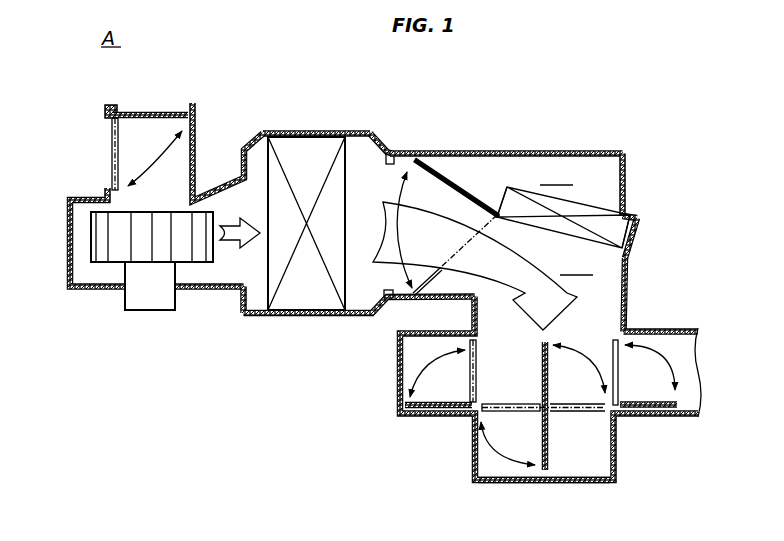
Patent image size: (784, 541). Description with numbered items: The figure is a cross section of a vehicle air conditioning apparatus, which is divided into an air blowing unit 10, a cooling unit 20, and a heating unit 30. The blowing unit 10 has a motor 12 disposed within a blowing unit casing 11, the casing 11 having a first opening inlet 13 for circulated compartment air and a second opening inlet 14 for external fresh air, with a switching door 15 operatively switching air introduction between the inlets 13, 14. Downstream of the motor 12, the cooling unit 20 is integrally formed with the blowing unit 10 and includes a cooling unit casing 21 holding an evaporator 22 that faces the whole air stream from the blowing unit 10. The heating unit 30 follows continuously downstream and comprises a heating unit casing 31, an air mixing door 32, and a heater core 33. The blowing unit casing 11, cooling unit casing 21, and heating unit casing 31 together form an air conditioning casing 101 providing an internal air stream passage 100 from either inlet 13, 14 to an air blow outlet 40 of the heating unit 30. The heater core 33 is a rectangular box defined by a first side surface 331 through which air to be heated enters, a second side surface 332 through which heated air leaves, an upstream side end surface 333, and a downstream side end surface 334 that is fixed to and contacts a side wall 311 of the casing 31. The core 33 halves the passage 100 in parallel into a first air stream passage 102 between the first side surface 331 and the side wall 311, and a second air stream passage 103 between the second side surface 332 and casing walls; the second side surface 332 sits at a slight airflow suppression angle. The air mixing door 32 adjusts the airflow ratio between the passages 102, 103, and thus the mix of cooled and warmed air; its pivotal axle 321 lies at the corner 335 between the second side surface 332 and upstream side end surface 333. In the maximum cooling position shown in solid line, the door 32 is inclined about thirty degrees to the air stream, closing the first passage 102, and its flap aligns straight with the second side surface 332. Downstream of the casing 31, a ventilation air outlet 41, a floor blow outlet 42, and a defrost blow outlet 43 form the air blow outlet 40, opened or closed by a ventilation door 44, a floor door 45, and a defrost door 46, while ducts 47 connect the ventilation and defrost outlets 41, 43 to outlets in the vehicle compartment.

The air blowing unit 10 is at (70, 200).
The blowing unit casing 11 is at (197, 150).
The motor 12 is at (136, 312).
The first opening inlet 13 is at (110, 118).
The second opening inlet 14 is at (117, 106).
The switching door 15 is at (158, 112).
The cooling unit 20 is at (295, 318).
The cooling unit casing 21 is at (310, 133).
The evaporator 22 is at (243, 298).
The heating unit 30 is at (563, 143).
The heating unit casing 31 is at (390, 152).
The air mixing door 32 is at (448, 167).
The heater core 33 is at (600, 208).
The air blow outlet 40 is at (740, 285).
The ventilation air outlet 41 is at (567, 427).
The floor blow outlet 42 is at (455, 382).
The defrost blow outlet 43 is at (640, 377).
The ventilation door 44 is at (550, 460).
The floor door 45 is at (432, 418).
The defrost door 46 is at (618, 385).
The ducts 47 is at (678, 417).
The internal air stream passage 100 is at (376, 229).
The air conditioning casing 101 is at (370, 66).
The first air stream passage 102 is at (558, 175).
The second air stream passage 103 is at (578, 265).
The side wall 311 is at (608, 165).
The pivotal axle 321 is at (497, 213).
The first side surface 331 is at (638, 218).
The second side surface 332 is at (628, 262).
The upstream side end surface 333 is at (505, 203).
The downstream side end surface 334 is at (632, 247).
The corner 335 is at (505, 222).